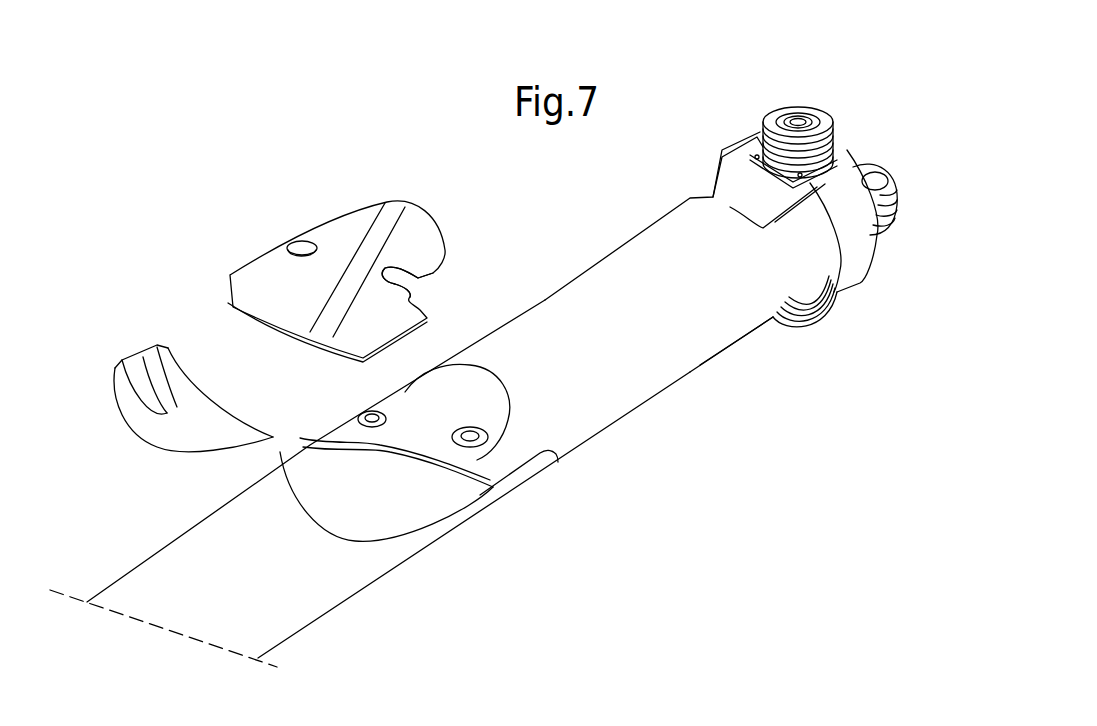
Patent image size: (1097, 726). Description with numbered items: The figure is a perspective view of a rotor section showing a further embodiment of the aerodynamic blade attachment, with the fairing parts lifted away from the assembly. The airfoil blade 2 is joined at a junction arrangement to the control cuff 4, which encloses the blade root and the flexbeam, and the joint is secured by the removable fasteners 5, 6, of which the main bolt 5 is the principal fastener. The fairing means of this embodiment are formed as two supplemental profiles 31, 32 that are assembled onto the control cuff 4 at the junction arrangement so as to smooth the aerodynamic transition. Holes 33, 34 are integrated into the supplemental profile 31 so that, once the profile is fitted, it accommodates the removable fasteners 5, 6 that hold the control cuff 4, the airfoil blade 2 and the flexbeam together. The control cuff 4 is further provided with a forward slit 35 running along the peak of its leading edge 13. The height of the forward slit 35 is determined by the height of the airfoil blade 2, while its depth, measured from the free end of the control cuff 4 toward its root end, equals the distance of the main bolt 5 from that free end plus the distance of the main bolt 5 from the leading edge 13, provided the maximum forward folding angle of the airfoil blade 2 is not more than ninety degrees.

The airfoil blade 2 is at (310, 592).
The control cuff 4 is at (640, 385).
The main bolt 5 is at (470, 427).
The removable fastener 6 is at (370, 411).
The leading edge 13 is at (713, 360).
The supplemental profile 31 is at (352, 225).
The supplemental profile 32 is at (160, 426).
The hole 33 is at (407, 275).
The hole 34 is at (300, 242).
The forward slit 35 is at (528, 473).